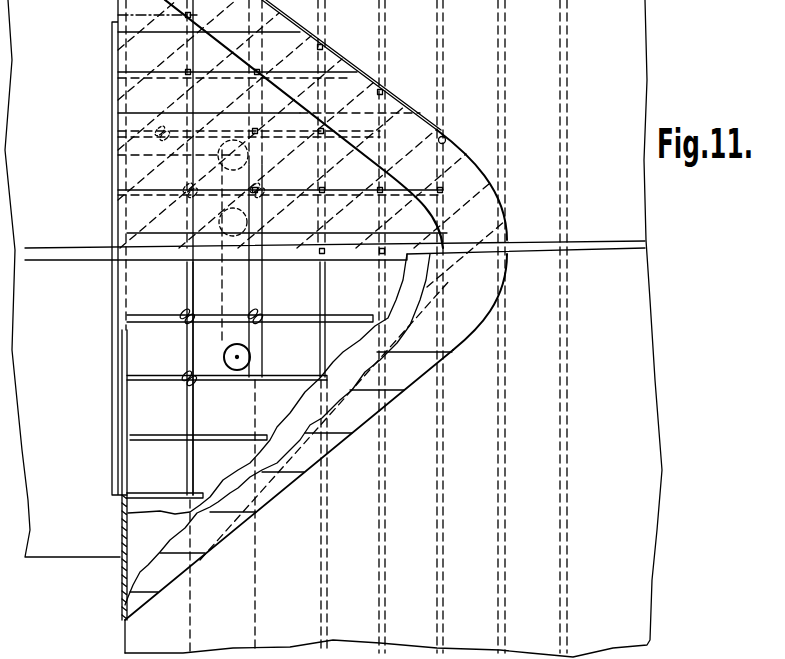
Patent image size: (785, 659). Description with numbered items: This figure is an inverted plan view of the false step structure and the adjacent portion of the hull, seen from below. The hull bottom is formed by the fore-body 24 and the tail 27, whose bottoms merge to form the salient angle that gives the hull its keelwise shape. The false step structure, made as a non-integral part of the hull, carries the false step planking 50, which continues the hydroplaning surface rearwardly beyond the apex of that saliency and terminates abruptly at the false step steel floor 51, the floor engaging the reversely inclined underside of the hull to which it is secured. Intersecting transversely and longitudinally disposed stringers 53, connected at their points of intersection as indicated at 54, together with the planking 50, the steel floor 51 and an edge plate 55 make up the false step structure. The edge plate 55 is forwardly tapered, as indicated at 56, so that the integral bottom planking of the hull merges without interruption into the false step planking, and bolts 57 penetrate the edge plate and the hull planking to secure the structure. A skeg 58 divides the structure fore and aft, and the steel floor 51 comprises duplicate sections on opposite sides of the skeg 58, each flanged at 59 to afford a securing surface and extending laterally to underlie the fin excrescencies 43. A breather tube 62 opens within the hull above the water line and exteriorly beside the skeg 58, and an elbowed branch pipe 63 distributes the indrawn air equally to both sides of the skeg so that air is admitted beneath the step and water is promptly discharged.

The fore-body 24 is at (653, 336).
The tail 27 is at (47, 567).
The fin excrescency 43 is at (118, 628).
The false step planking 50 is at (413, 395).
The false step steel floor 51 is at (125, 463).
The stringers 53 is at (147, 378).
The connection 54 is at (197, 386).
The edge plate 55 is at (453, 170).
The forward taper 56 is at (447, 142).
The bolts 57 is at (382, 92).
The skeg 58 is at (62, 262).
The flange 59 is at (115, 204).
The breather tube 62 is at (250, 224).
The branch pipe 63 is at (251, 357).